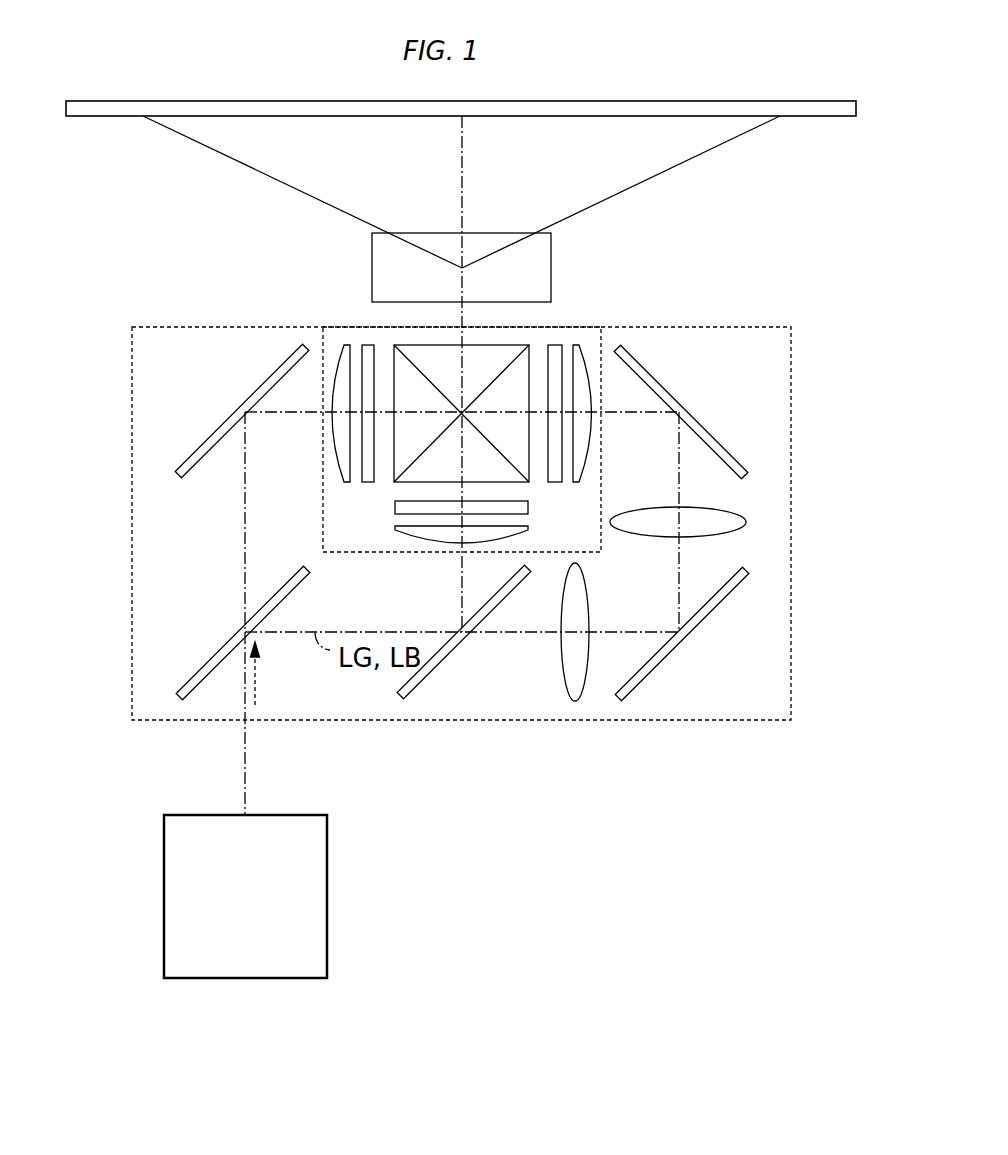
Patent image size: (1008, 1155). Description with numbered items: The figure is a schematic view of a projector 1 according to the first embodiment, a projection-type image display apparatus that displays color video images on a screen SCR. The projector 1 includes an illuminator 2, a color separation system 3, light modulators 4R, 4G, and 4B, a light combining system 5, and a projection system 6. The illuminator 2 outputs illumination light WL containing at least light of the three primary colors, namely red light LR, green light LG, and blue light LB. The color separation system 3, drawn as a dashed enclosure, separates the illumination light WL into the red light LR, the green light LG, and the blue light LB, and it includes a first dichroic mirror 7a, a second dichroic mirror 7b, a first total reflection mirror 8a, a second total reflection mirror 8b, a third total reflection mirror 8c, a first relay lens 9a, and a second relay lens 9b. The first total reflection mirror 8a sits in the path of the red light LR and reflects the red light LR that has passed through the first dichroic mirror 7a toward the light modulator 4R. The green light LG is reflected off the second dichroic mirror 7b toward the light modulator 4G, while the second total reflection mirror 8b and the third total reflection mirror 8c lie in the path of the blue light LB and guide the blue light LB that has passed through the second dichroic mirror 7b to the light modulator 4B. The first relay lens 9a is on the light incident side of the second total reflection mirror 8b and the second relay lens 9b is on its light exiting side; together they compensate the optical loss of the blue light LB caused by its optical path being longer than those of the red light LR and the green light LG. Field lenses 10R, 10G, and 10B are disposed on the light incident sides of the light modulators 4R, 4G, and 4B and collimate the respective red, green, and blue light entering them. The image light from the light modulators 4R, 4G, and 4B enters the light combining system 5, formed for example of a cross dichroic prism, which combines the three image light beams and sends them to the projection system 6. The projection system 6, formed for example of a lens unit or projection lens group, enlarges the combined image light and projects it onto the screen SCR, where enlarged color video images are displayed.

The projector 1 is at (800, 300).
The illuminator 2 is at (327, 893).
The color separation system 3 is at (132, 468).
The light modulator 4R is at (368, 343).
The light modulator 4G is at (398, 510).
The light modulator 4B is at (556, 343).
The light combining system 5 is at (476, 354).
The projection system 6 is at (445, 243).
The first dichroic mirror 7a is at (209, 666).
The second dichroic mirror 7b is at (440, 665).
The first total reflection mirror 8a is at (220, 428).
The second total reflection mirror 8b is at (705, 618).
The third total reflection mirror 8c is at (706, 428).
The first relay lens 9a is at (561, 654).
The second relay lens 9b is at (735, 513).
The field lens 10R is at (347, 343).
The field lens 10G is at (400, 530).
The field lens 10B is at (583, 343).
The screen SCR is at (820, 117).
The illumination light WL is at (258, 690).
The red light LR is at (245, 548).
The green light LG is at (460, 588).
The blue light LB is at (678, 578).